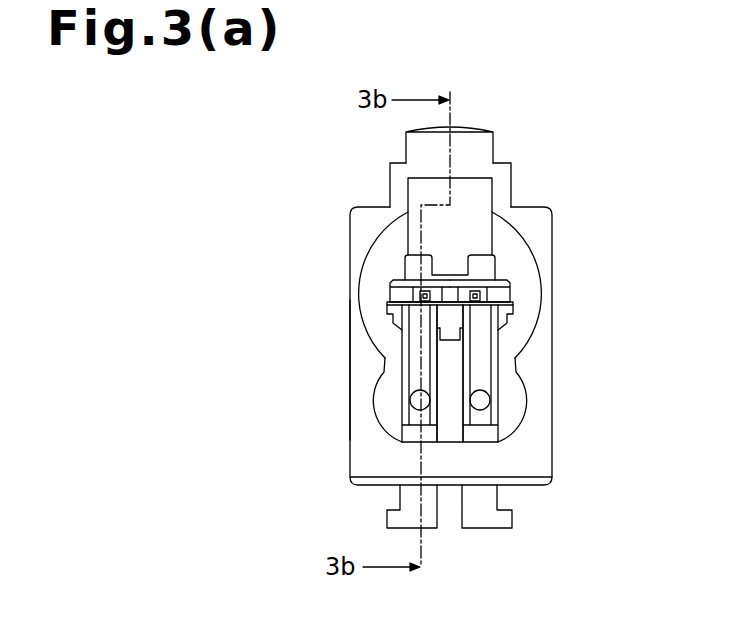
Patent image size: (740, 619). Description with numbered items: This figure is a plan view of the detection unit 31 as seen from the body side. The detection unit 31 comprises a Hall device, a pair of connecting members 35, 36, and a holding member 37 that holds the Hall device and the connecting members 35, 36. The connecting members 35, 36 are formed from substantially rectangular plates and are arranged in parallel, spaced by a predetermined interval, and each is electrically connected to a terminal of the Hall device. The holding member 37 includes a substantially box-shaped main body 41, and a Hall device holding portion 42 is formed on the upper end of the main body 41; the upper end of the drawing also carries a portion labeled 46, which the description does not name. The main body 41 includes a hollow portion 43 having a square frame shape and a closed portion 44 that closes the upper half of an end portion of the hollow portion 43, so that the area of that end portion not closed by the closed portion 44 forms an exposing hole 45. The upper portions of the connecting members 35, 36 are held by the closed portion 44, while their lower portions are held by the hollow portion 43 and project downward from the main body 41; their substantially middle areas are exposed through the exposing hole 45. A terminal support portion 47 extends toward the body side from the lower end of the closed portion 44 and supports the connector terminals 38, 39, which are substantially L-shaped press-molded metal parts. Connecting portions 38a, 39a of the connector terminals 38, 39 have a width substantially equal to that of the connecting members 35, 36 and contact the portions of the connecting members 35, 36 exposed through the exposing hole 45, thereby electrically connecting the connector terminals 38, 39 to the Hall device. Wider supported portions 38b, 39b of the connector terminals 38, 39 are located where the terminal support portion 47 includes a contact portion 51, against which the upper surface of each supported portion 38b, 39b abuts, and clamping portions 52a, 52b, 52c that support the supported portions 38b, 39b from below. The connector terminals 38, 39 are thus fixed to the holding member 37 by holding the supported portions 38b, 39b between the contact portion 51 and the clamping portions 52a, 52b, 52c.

The detection unit 31 is at (578, 490).
The connecting member 35 is at (500, 530).
The connecting member 36 is at (387, 513).
The holding member 37 is at (552, 440).
The connector terminal 38 is at (480, 428).
The connecting portion 38a is at (490, 392).
The supported portion 38b is at (505, 297).
The connector terminal 39 is at (408, 428).
The connecting portion 39a is at (408, 414).
The supported portion 39b is at (390, 285).
The main body 41 is at (547, 490).
The Hall device holding portion 42 is at (511, 180).
The hollow portion 43 is at (350, 460).
The closed portion 44 is at (515, 243).
The exposing hole 45 is at (447, 432).
The cap 46 is at (471, 128).
The terminal support portion 47 is at (498, 268).
The contact portion 51 is at (452, 277).
The clamping portion 52a is at (508, 315).
The clamping portion 52b is at (445, 328).
The clamping portion 52c is at (390, 317).